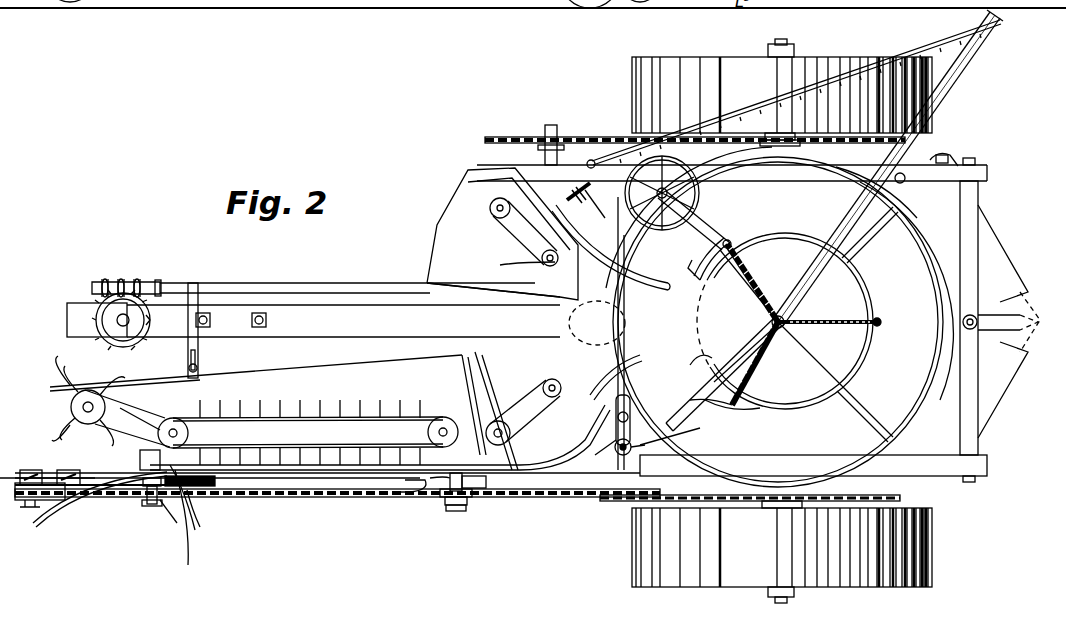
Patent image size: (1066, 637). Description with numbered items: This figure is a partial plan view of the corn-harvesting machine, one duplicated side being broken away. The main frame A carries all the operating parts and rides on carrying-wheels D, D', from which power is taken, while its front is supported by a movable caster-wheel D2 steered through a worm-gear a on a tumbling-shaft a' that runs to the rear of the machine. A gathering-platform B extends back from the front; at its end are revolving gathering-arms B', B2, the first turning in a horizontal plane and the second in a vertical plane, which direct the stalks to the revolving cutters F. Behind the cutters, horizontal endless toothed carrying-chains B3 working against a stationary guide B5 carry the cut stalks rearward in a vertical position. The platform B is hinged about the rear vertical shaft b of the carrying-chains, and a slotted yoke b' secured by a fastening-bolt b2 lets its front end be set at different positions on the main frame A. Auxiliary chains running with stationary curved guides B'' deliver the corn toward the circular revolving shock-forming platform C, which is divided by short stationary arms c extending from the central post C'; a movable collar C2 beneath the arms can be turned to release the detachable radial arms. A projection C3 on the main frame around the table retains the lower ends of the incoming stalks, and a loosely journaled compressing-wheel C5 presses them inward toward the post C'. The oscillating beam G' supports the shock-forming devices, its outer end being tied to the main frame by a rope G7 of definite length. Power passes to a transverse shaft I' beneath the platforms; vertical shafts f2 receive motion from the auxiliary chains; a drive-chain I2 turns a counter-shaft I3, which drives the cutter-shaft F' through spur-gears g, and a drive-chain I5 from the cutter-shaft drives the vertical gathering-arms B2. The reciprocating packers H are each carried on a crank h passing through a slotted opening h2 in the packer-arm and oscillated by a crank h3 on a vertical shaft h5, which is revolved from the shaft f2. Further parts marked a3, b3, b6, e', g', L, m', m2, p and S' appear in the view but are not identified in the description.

The main frame A is at (218, 270).
The worm-gear a is at (126, 304).
The tumbling-shaft a' is at (343, 301).
The frame bracket a3 is at (945, 156).
The gathering-platform B is at (425, 282).
The revolving gathering-arm B' is at (104, 401).
The stationary curved guide B'' is at (527, 360).
The revolving gathering-arm B2 is at (312, 393).
The carrying-chain B3 is at (310, 450).
The stationary guide B5 is at (368, 472).
The vertical shaft b is at (419, 380).
The slotted yoke b' is at (179, 330).
The fastening-bolt b2 is at (205, 375).
The link b3 is at (163, 428).
The arm b6 is at (120, 395).
The revolving shock-forming platform C is at (778, 322).
The central supporting-post C' is at (785, 321).
The movable collar C2 is at (786, 408).
The projection C3 is at (920, 240).
The compressing-wheel C5 is at (638, 190).
The stationary projecting arm c is at (833, 300).
The carrying-wheel D is at (782, 552).
The carrying-wheel D' is at (782, 92).
The caster-wheel D2 is at (78, 321).
The radial shafts e' is at (812, 324).
The revolving cutter F is at (193, 504).
The cutter-shaft F' is at (151, 507).
The vertical shaft f2 is at (495, 215).
The oscillating beam G' is at (834, 220).
The rope G7 is at (940, 58).
The spur-gear g is at (173, 517).
The rod g' is at (536, 363).
The reciprocating packer H is at (620, 372).
The crank h is at (622, 425).
The slotted opening h2 is at (632, 405).
The crank h3 is at (605, 455).
The vertical shaft h5 is at (677, 434).
The transverse shaft I' is at (456, 507).
The drive-chain I2 is at (236, 500).
The counter-shaft I3 is at (180, 527).
The drive-chain I5 is at (108, 500).
The bracket L is at (1001, 321).
The curved bars m' is at (704, 321).
The hook m2 is at (676, 351).
The pin p is at (901, 183).
The lever S' is at (525, 257).